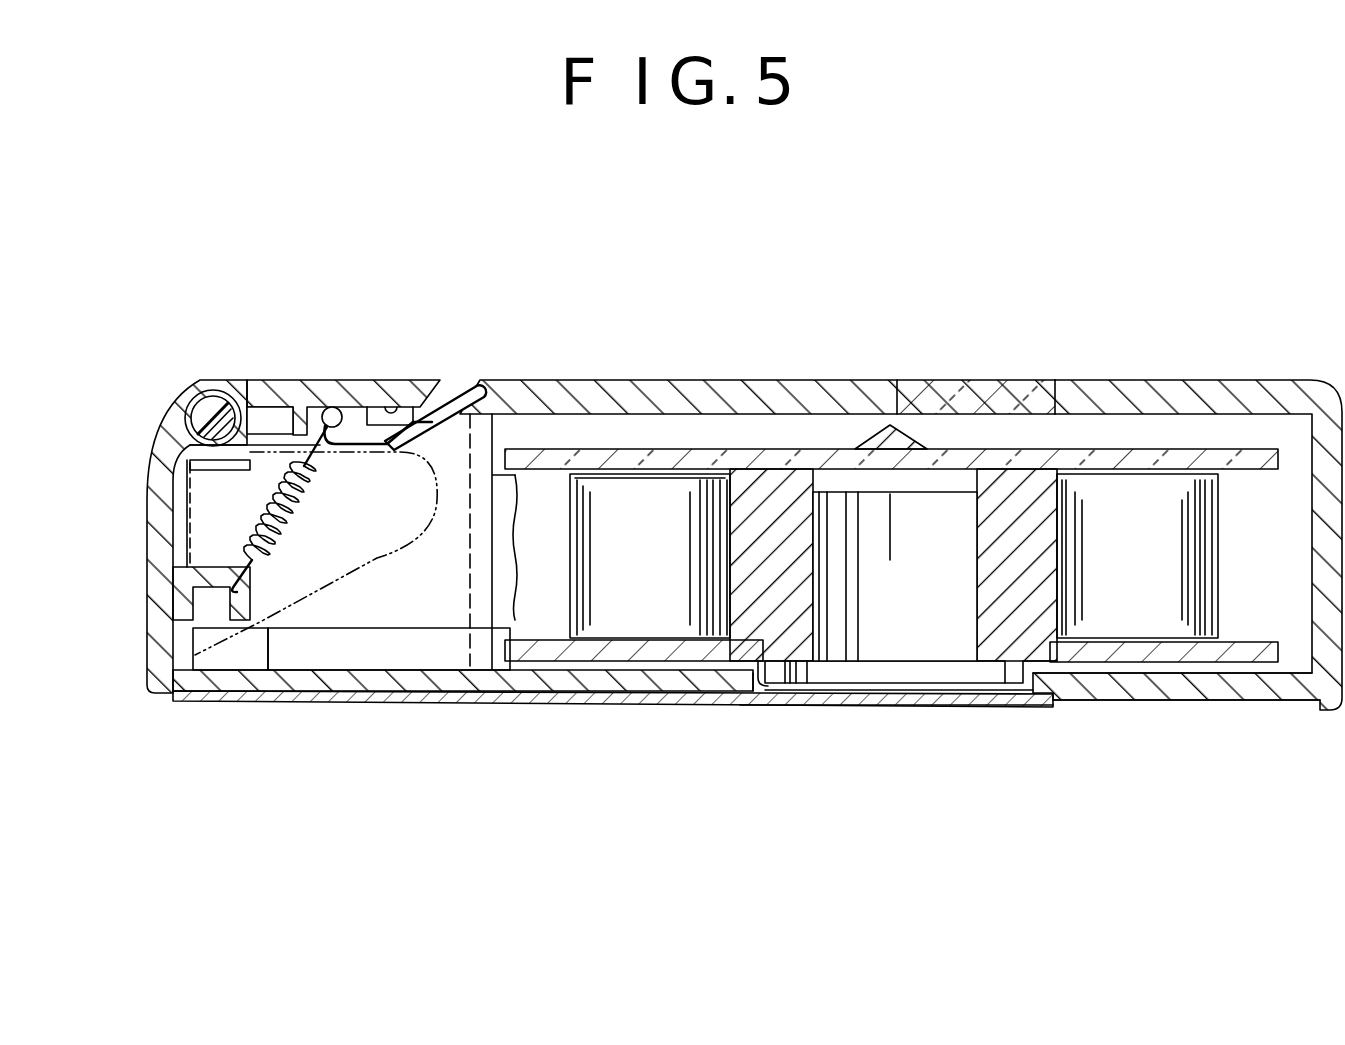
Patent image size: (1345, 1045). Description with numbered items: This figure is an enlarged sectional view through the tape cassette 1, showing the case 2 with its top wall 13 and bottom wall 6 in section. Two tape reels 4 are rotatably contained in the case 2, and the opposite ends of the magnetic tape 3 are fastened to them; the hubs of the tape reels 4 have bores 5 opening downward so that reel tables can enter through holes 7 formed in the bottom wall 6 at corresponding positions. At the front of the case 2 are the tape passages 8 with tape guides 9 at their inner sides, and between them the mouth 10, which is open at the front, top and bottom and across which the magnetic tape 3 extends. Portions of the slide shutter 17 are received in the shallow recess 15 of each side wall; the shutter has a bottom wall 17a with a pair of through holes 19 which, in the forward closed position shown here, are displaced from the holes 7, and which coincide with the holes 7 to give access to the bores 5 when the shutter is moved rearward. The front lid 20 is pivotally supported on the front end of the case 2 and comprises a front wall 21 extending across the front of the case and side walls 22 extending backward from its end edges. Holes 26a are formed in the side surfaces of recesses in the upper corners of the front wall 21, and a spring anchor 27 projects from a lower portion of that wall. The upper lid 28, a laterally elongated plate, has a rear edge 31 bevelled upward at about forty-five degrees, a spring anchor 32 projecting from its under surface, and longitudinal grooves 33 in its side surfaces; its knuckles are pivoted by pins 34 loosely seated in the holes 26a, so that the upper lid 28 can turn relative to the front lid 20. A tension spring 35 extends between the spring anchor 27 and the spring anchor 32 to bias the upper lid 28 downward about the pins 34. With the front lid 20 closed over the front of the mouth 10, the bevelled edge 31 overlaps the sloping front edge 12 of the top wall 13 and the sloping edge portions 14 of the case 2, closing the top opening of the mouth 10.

The tape cassette 1 is at (1103, 303).
The case 2 is at (1160, 382).
The magnetic tape 3 is at (1222, 520).
The tape reel 4 is at (1225, 455).
The bore 5 is at (833, 632).
The bottom wall 6 is at (1252, 682).
The hole 7 is at (775, 689).
The tape passage 8 is at (200, 652).
The tape guide 9 is at (257, 657).
The mouth 10 is at (470, 648).
The front edge 12 is at (482, 392).
The top wall 13 is at (757, 381).
The sloping edge portion 14 is at (442, 392).
The recess 15 is at (1117, 703).
The slide shutter 17 is at (895, 706).
The bottom wall 17a is at (938, 702).
The through hole 19 is at (740, 695).
The front lid 20 is at (147, 508).
The front wall 21 is at (150, 555).
The side wall 22 is at (377, 558).
The hole 26a is at (200, 397).
The spring anchor 27 is at (211, 570).
The upper lid 28 is at (427, 411).
The rear edge 31 is at (492, 388).
The spring anchor 32 is at (347, 433).
The longitudinal groove 33 is at (390, 410).
The pin 34 is at (232, 380).
The tension spring 35 is at (297, 520).